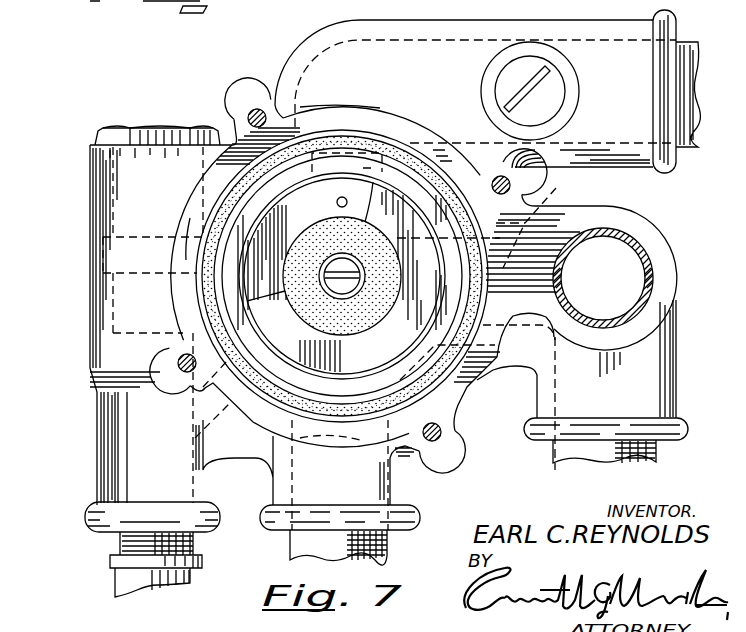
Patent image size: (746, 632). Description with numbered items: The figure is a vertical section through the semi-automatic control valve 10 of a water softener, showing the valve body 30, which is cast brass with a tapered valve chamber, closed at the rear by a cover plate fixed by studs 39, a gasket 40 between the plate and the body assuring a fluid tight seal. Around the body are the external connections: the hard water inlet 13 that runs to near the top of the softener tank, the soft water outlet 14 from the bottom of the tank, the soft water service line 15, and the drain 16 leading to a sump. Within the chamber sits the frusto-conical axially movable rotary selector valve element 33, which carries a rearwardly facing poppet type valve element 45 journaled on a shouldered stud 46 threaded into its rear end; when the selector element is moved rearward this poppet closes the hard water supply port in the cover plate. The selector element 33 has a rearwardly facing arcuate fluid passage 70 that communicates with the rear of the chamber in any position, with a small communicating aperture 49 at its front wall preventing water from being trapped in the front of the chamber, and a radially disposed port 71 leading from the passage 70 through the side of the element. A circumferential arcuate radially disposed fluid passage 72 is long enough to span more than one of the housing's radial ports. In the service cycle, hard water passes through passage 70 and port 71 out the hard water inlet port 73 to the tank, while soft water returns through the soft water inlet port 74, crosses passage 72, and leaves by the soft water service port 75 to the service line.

The semi-automatic control valve 10 is at (80, 193).
The hard water inlet 13 is at (683, 45).
The soft water outlet 14 is at (387, 551).
The soft water service line 15 is at (652, 260).
The drain 16 is at (120, 585).
The valve body 30 is at (468, 384).
The axially movable rotary selector valve element 33 is at (233, 200).
The studs 39 is at (240, 100).
The gasket 40 is at (207, 168).
The poppet type valve element 45 is at (380, 301).
The shouldered stud 46 is at (338, 288).
The small communicating aperture 49 is at (338, 204).
The arcuate fluid passage 70 is at (281, 210).
The radially disposed port 71 is at (384, 170).
The arcuate radially disposed fluid passage 72 is at (493, 345).
The hard water inlet port 73 is at (358, 132).
The soft water inlet port 74 is at (300, 440).
The soft water service port 75 is at (556, 206).